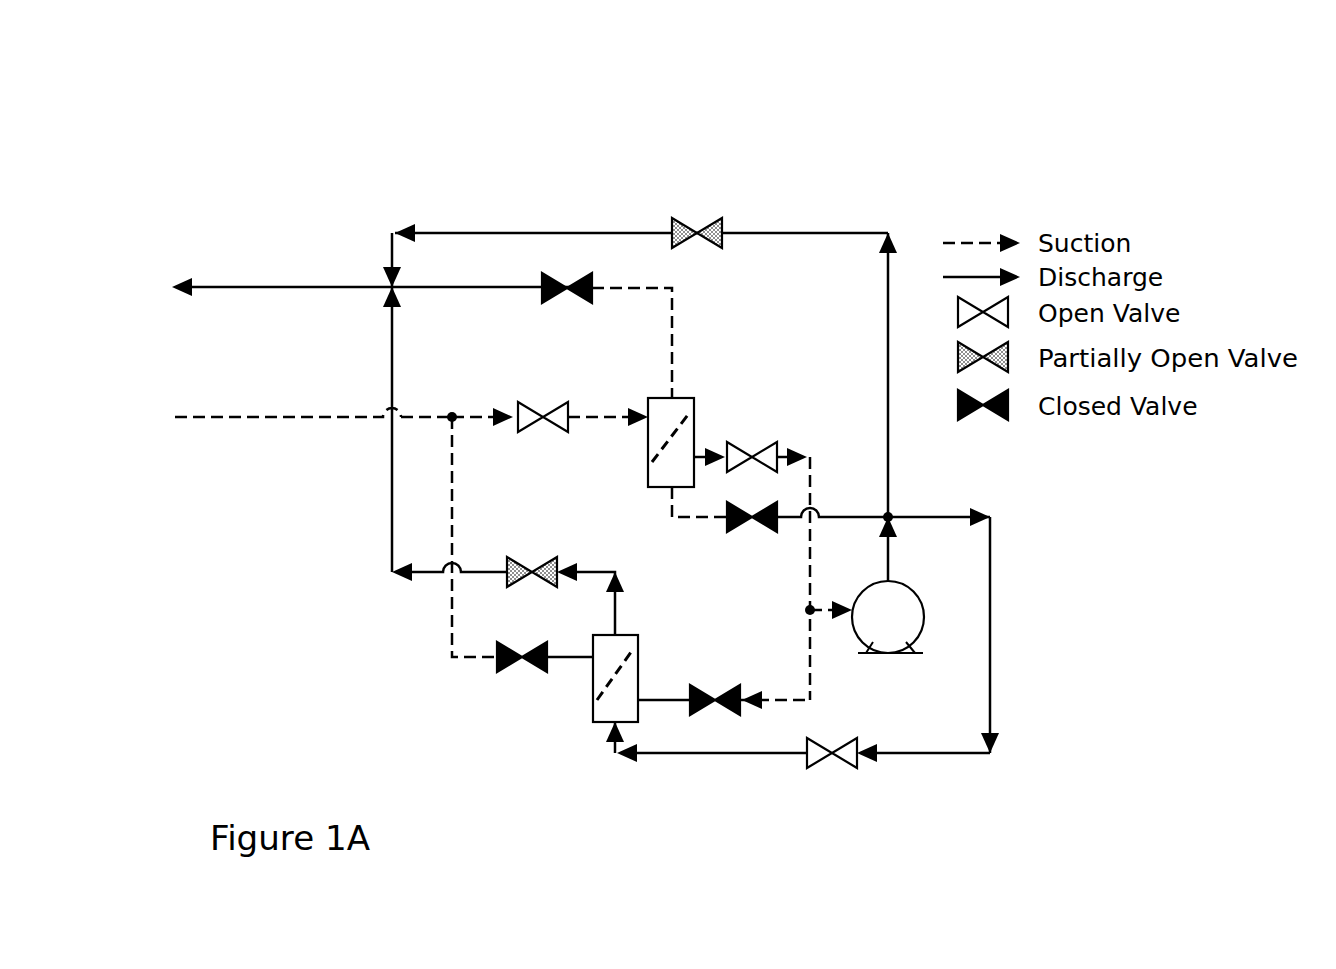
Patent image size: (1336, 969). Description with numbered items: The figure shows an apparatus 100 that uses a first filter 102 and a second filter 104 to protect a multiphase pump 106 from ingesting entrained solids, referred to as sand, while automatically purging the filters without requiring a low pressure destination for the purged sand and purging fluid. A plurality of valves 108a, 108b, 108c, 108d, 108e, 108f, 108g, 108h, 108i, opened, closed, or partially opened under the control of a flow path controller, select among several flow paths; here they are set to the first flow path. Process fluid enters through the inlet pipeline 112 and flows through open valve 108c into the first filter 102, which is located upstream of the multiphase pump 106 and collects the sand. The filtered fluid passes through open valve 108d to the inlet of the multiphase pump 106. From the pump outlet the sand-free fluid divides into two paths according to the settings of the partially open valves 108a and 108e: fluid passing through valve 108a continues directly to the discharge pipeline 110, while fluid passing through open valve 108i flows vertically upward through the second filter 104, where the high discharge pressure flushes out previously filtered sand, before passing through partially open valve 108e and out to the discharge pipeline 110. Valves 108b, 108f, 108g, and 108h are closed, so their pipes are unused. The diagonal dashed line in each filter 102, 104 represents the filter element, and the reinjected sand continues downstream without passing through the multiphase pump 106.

The apparatus 100 is at (950, 180).
The first filter 102 is at (694, 410).
The second filter 104 is at (638, 672).
The multiphase pump 106 is at (888, 617).
The valve 108a is at (688, 220).
The valve 108b is at (590, 287).
The valve 108c is at (537, 410).
The valve 108d is at (743, 448).
The valve 108e is at (555, 568).
The valve 108f is at (762, 530).
The valve 108g is at (505, 650).
The valve 108h is at (700, 692).
The valve 108i is at (826, 746).
The discharge pipeline 110 is at (340, 285).
The inlet pipeline 112 is at (335, 415).